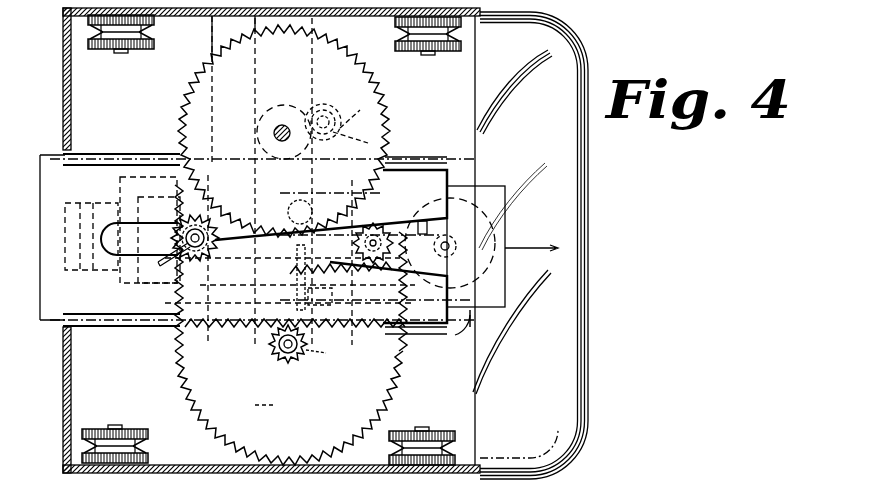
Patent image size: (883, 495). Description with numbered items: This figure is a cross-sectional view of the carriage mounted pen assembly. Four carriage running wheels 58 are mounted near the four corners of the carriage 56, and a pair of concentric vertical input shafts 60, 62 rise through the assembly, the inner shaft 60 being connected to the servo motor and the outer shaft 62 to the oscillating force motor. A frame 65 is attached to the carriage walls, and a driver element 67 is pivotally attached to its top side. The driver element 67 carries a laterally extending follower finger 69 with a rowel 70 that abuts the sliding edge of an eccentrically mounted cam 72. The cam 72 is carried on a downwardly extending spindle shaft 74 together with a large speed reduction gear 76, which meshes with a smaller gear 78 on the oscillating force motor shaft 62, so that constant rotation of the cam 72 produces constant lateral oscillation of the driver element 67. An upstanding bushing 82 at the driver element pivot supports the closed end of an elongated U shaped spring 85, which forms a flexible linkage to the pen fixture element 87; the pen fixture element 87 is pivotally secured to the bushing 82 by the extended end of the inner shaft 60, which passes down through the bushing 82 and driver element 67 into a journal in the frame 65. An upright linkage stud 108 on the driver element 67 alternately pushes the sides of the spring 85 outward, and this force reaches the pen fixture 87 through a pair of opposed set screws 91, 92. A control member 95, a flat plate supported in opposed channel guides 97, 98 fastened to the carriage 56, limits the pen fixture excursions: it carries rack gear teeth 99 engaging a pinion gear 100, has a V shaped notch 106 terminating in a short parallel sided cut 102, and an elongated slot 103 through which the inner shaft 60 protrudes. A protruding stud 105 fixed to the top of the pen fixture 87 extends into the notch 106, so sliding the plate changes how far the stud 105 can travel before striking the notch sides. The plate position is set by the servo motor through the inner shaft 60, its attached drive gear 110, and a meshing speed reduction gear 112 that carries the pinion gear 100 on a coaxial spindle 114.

The carriage 56 is at (232, 472).
The carriage running wheels 58 is at (115, 46).
The inner input shaft 60 is at (160, 262).
The oscillating force motor shaft 62 is at (186, 254).
The frame 65 is at (276, 405).
The driver element 67 is at (461, 338).
The follower finger 69 is at (357, 109).
The rowel 70 is at (333, 108).
The eccentrically mounted cam 72 is at (292, 105).
The spindle shaft 74 is at (274, 133).
The large speed reduction gear 76 is at (178, 108).
The smaller gear 78 is at (178, 222).
The upstanding bushing 82 is at (139, 239).
The U shaped spring 85 is at (430, 242).
The pen fixture element 87 is at (112, 332).
The set screw 91 is at (322, 277).
The set screw 92 is at (310, 212).
The control member 95 is at (442, 334).
The channel guide 97 is at (104, 150).
The channel guide 98 is at (147, 332).
The rack gear teeth 99 is at (243, 332).
The pinion gear 100 is at (290, 364).
The parallel sided cut 102 is at (341, 274).
The elongated slot 103 is at (295, 297).
The protruding stud 105 is at (354, 243).
The V shaped notch 106 is at (331, 246).
The linkage stud 108 is at (481, 246).
The drive gear 110 is at (295, 180).
The speed reduction gear 112 is at (186, 405).
The coaxial spindle 114 is at (333, 354).